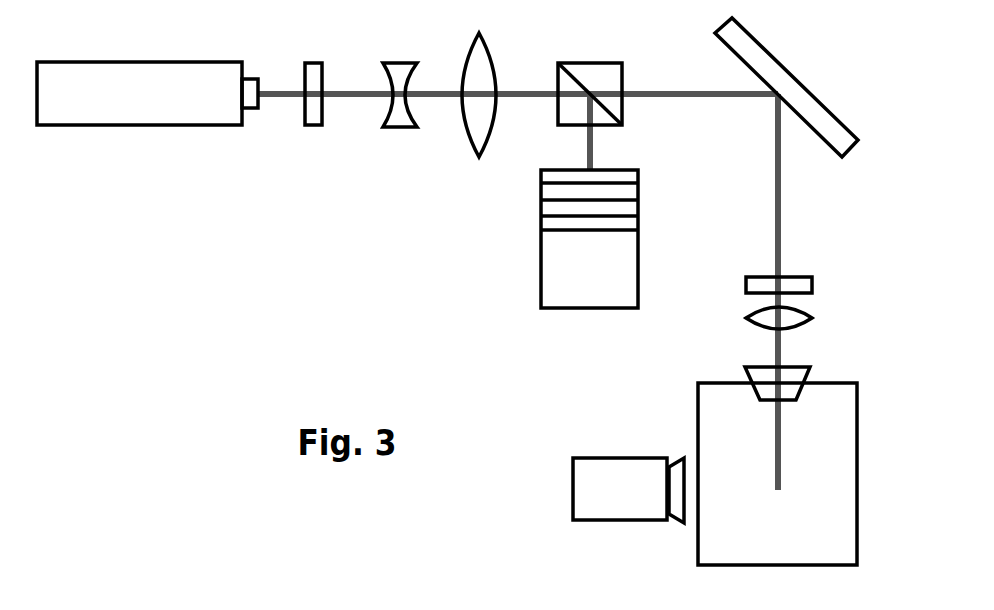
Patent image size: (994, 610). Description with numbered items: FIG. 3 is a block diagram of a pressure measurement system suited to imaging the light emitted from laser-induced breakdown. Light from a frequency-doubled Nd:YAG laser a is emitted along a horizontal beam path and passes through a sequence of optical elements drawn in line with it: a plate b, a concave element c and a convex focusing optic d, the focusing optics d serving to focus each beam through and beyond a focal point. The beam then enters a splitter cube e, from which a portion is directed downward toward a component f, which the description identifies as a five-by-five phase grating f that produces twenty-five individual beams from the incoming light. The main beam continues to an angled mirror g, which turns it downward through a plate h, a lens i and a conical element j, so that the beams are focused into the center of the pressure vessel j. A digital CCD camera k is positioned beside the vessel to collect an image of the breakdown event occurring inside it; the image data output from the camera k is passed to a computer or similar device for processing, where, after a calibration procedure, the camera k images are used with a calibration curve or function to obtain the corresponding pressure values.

The frequency-doubled Nd:YAG laser a is at (147, 74).
The optical plate / filter b is at (325, 74).
The concave lens c is at (403, 75).
The focusing optics d is at (484, 78).
The beam splitter e is at (590, 74).
The 5×5 phase grating f is at (589, 259).
The mirror g is at (786, 87).
The optical window / plate h is at (814, 280).
The focusing lens i is at (809, 315).
The pressure vessel j is at (808, 368).
The digital CCD camera k is at (628, 508).